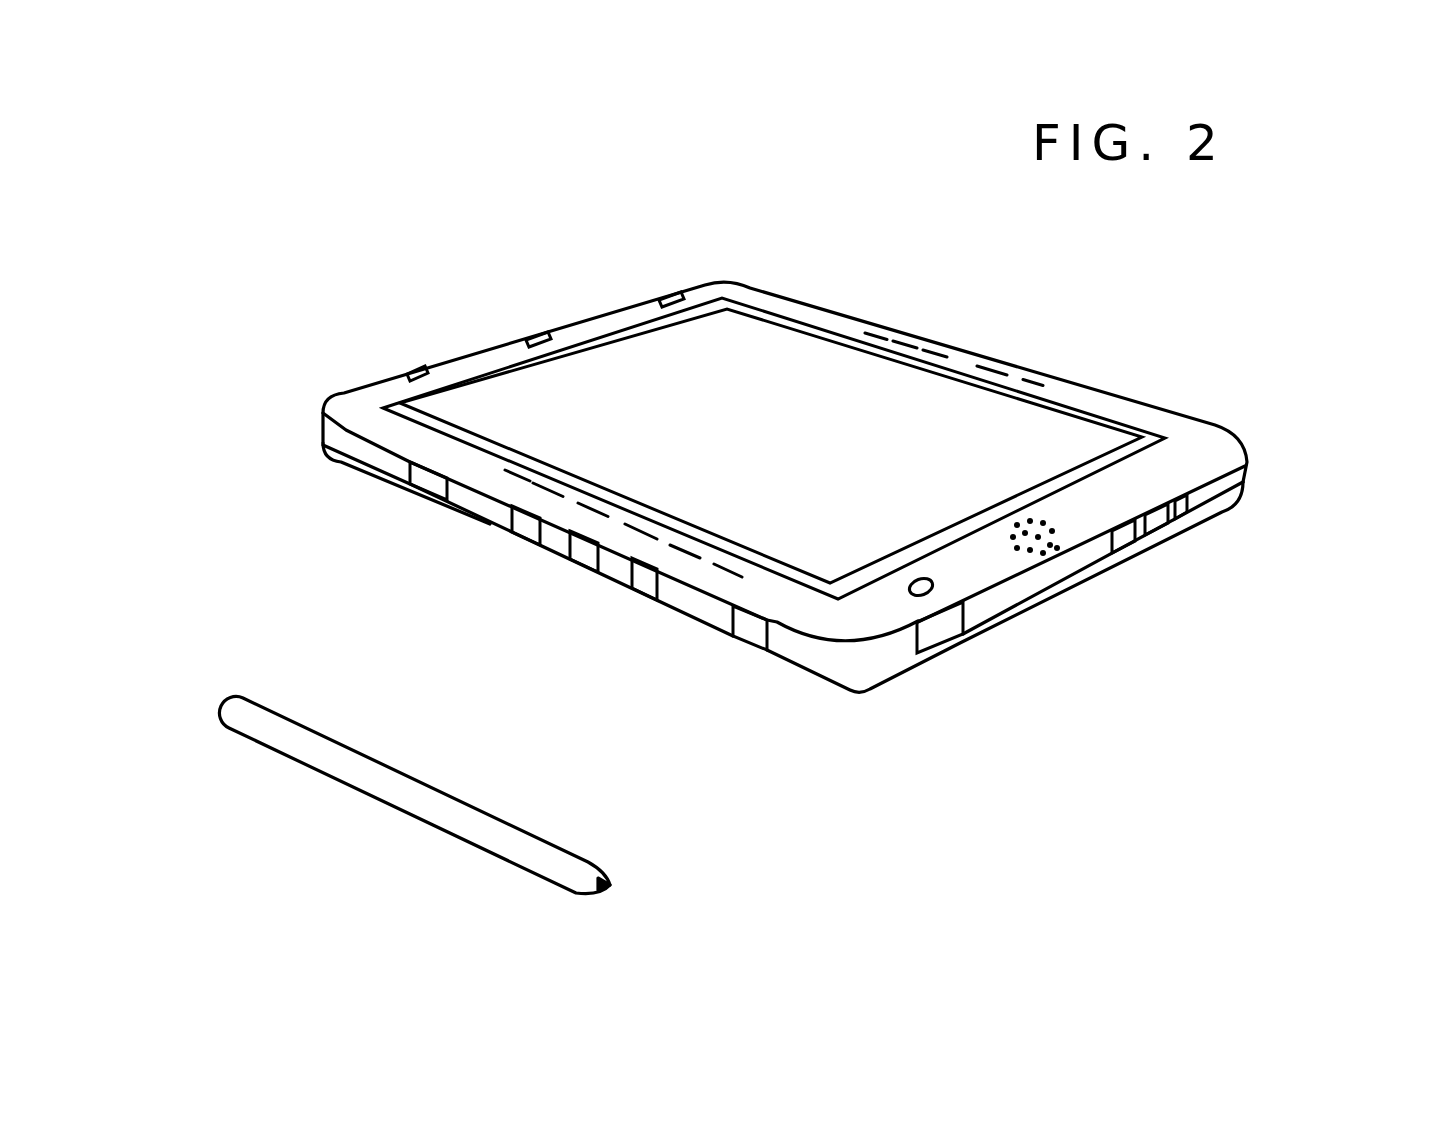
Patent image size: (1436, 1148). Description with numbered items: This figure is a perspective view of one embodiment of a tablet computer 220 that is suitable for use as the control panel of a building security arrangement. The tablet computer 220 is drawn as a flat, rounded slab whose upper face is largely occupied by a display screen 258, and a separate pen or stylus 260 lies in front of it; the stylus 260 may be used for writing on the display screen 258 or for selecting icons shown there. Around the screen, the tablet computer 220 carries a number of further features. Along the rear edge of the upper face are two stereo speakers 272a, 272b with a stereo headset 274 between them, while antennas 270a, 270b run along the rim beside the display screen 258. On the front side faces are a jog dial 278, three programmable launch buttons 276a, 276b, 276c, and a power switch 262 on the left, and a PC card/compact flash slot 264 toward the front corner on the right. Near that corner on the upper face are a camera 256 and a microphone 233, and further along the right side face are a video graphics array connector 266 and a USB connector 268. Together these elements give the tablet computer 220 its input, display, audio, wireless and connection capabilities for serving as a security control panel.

The tablet computer 220 is at (1262, 714).
The microphone 233 is at (1048, 543).
The camera 256 is at (935, 584).
The display screen 258 is at (810, 443).
The stylus 260 is at (481, 827).
The power switch 262 is at (753, 637).
The PC card/compact flash slot 264 is at (967, 620).
The video graphics array connector 266 is at (1140, 535).
The USB connector 268 is at (1173, 513).
The antenna 270a is at (963, 366).
The antenna 270b is at (510, 476).
The stereo speaker 272a is at (412, 370).
The stereo speaker 272b is at (672, 296).
The stereo headset 274 is at (539, 336).
The programmable launch button 276a is at (523, 530).
The programmable launch button 276b is at (587, 557).
The programmable launch button 276c is at (647, 580).
The jog dial 278 is at (423, 481).